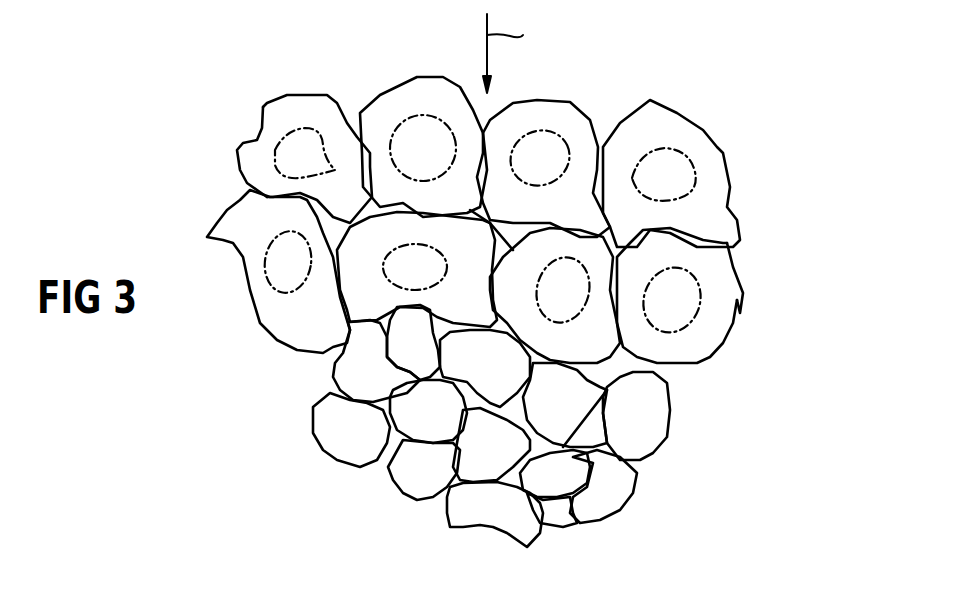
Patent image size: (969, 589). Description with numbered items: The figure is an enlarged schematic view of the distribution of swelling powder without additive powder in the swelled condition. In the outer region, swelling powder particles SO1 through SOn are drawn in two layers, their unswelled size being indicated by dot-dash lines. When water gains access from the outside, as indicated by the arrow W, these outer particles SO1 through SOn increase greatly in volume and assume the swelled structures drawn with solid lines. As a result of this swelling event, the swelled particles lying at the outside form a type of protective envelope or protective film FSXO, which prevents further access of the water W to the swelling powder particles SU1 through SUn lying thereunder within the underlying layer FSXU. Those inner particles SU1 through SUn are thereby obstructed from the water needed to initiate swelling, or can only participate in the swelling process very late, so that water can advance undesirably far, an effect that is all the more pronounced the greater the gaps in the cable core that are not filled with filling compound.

The water access arrow W is at (516, 53).
The protective envelope or protective film FSXO is at (717, 147).
The first outer swelling powder particle SO1 is at (290, 152).
The n-th outer swelling powder particle SOn is at (717, 355).
The underlying layer of unexpanded swelling powder FSXU is at (337, 460).
The first underlying swelling powder particle SU1 is at (340, 370).
The n-th underlying swelling powder particle SUn is at (650, 435).